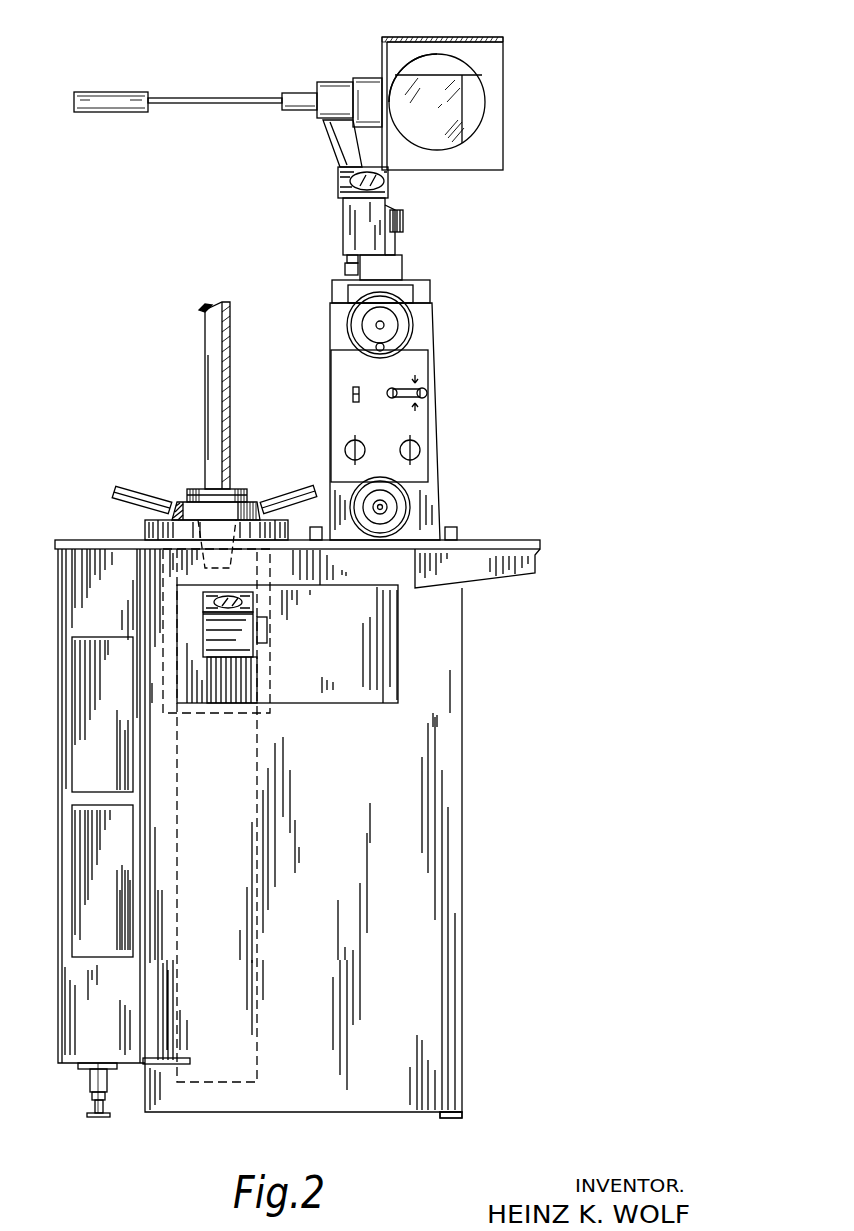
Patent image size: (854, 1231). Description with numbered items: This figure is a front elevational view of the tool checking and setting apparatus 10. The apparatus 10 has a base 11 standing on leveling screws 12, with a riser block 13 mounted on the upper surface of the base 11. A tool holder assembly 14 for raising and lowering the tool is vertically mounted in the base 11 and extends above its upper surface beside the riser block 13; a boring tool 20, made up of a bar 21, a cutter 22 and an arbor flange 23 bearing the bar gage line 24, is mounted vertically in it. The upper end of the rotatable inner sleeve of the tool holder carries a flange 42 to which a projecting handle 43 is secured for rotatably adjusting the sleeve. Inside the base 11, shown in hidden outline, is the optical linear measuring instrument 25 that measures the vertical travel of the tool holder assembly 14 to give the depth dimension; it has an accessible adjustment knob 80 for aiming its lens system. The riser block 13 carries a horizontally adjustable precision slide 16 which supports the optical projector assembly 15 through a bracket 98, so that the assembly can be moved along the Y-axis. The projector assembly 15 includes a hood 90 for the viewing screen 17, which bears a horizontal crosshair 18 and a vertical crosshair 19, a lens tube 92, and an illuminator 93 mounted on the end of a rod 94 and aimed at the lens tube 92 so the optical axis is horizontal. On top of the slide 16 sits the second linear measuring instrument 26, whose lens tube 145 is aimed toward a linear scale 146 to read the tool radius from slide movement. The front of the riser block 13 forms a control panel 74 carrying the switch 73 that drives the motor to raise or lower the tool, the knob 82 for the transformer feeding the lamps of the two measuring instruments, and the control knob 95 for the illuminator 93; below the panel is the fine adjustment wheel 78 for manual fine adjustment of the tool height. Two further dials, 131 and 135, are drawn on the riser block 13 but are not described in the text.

The tool checking and setting apparatus 10 is at (73, 532).
The base 11 is at (450, 862).
The leveling screws 12 is at (95, 1118).
The riser block 13 is at (332, 327).
The tool holder assembly 14 is at (177, 488).
The optical projector assembly 15 is at (493, 31).
The precision slide 16 is at (355, 293).
The viewing screen 17 is at (443, 140).
The horizontal crosshair 18 is at (470, 108).
The vertical crosshair 19 is at (412, 72).
The boring tool 20 is at (198, 357).
The bar 21 is at (205, 395).
The cutter 22 is at (205, 305).
The arbor flange 23 is at (193, 487).
The bar gage line 24 is at (235, 490).
The linear measuring instrument 25 is at (268, 653).
The linear measuring instrument 26 is at (338, 222).
The flange 42 is at (255, 500).
The handle 43 is at (130, 482).
The switch 73 is at (427, 391).
The control panel 74 is at (425, 367).
The fine adjustment wheel 78 is at (412, 507).
The adjustment knob 80 is at (268, 632).
The knob 82 is at (350, 447).
The hood 90 is at (432, 18).
The lens tube 92 is at (298, 92).
The illuminator 93 is at (100, 91).
The rod 94 is at (205, 97).
The control knob 95 is at (415, 448).
The bracket 98 is at (333, 157).
The dial 131 is at (412, 327).
The dial ring 135 is at (410, 313).
The lens tube 145 is at (347, 258).
The linear scale 146 is at (347, 270).